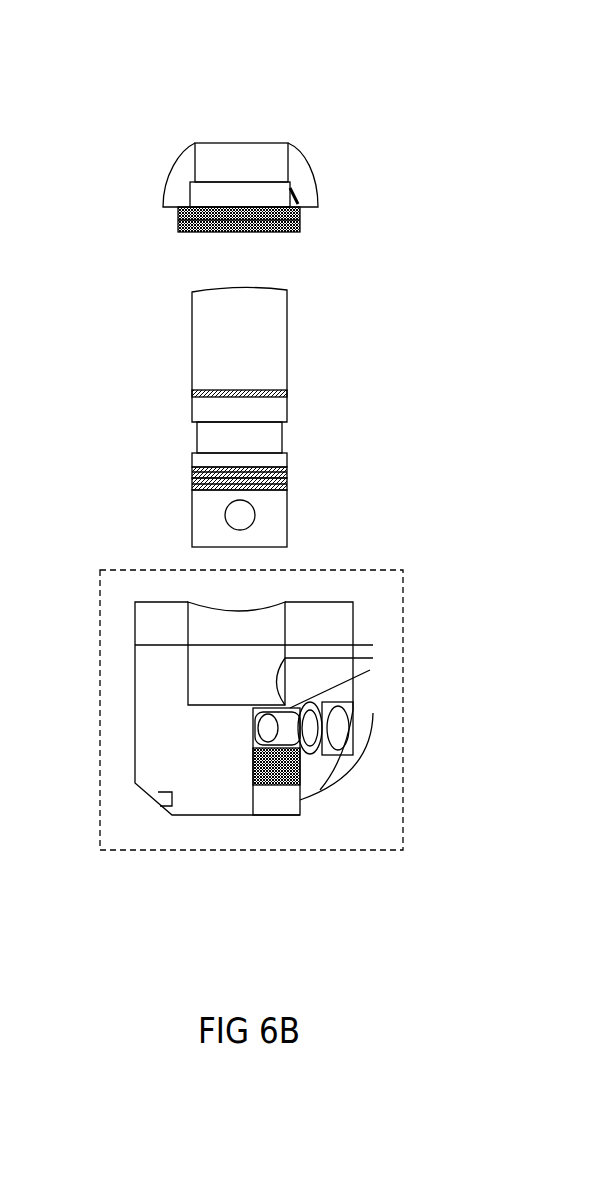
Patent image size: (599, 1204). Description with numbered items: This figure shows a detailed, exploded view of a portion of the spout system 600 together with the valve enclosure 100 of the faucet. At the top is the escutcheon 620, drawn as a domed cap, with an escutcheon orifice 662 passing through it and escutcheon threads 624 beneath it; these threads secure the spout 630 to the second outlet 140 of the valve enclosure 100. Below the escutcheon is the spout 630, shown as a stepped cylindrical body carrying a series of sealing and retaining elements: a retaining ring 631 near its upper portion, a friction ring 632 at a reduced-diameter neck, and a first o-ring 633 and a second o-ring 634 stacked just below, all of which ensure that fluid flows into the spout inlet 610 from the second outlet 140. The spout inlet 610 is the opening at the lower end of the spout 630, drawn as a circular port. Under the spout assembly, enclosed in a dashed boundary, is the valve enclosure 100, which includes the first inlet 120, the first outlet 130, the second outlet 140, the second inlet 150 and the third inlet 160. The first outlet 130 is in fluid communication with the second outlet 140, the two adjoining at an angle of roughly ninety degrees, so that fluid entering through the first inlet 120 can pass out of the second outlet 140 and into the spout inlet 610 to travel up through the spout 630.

The spout system 600 is at (172, 72).
The escutcheon 620 is at (178, 182).
The escutcheon threads 624 is at (178, 228).
The escutcheon orifice 662 is at (292, 193).
The spout 630 is at (218, 340).
The retaining ring 631 is at (197, 394).
The friction ring 632 is at (290, 437).
The first o-ring 633 is at (290, 476).
The second o-ring 634 is at (290, 490).
The spout inlet 610 is at (215, 517).
The valve enclosure 100 is at (402, 578).
The second outlet 140 is at (215, 660).
The first outlet 130 is at (336, 689).
The first inlet 120 is at (325, 714).
The second inlet 150 is at (283, 734).
The third inlet 160 is at (285, 800).